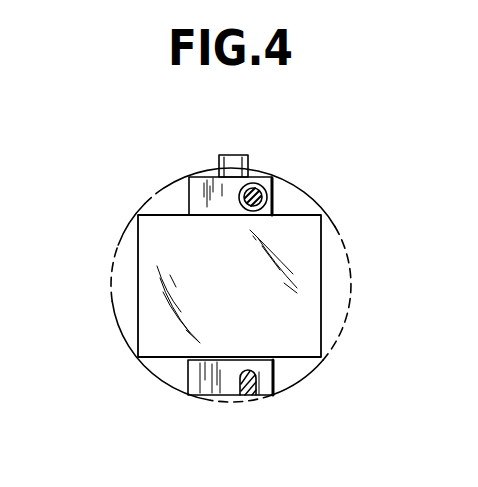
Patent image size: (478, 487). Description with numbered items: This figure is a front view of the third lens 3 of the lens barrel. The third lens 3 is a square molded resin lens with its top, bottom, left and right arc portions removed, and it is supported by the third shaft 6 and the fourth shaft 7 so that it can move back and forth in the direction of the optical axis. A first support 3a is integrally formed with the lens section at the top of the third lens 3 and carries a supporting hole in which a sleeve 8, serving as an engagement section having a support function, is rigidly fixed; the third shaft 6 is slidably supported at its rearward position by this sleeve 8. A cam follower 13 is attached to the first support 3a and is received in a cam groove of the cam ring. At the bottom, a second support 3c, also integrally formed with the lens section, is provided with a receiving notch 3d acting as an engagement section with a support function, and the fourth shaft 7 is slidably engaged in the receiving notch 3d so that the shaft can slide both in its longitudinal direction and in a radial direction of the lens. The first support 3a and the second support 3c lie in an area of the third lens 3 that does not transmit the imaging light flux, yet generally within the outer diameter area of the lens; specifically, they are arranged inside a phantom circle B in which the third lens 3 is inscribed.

The third lens 3 is at (158, 263).
The first support 3a is at (188, 200).
The second support 3c is at (188, 375).
The receiving notch 3d is at (273, 365).
The third shaft 6 is at (267, 197).
The fourth shaft 7 is at (248, 395).
The sleeve 8 is at (273, 182).
The cam follower 13 is at (233, 155).
The phantom circle B is at (115, 322).